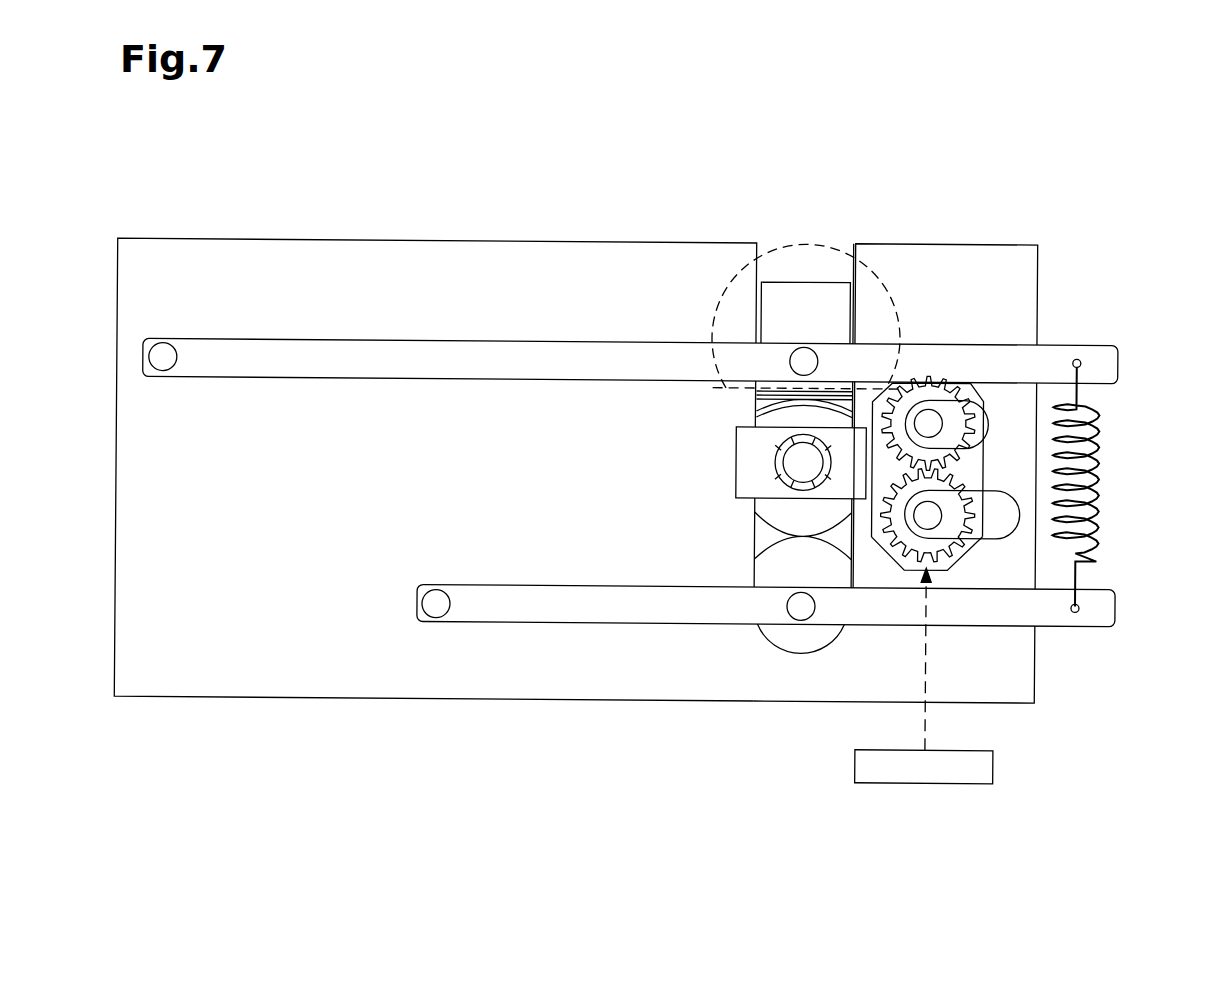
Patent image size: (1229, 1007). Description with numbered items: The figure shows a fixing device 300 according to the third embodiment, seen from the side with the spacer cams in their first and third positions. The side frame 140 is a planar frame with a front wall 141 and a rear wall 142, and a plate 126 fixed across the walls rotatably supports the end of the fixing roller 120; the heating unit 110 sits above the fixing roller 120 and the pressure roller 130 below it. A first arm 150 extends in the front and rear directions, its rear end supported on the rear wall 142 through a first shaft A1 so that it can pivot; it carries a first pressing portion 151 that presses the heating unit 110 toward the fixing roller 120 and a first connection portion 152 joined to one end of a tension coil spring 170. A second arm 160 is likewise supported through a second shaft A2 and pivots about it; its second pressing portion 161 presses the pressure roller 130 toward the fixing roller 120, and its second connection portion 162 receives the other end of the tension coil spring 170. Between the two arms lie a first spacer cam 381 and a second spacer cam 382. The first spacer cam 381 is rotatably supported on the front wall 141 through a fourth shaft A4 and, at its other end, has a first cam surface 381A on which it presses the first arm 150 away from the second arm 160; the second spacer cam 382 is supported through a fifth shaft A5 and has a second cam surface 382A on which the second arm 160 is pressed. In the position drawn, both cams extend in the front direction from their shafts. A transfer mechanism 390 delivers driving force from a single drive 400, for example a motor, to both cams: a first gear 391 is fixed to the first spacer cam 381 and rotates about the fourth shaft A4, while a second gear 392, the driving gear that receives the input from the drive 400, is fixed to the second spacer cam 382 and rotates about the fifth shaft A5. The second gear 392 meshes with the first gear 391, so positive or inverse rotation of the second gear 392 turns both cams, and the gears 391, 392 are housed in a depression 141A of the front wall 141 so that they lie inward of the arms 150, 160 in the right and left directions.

The fixing device 300 is at (186, 205).
The heating unit 110 is at (819, 242).
The fixing roller 120 is at (772, 511).
The plate 126 is at (745, 457).
The pressure roller 130 is at (770, 565).
The side frame 140 is at (958, 243).
The front wall 141 is at (1002, 464).
The depression 141A is at (947, 561).
The rear wall 142 is at (559, 281).
The first arm 150 is at (442, 341).
The first pressing portion 151 is at (796, 356).
The first connection portion 152 is at (1083, 354).
The second arm 160 is at (672, 624).
The second pressing portion 161 is at (797, 609).
The second connection portion 162 is at (1078, 611).
The tension coil spring 170 is at (1100, 519).
The first spacer cam 381 is at (1036, 368).
The first cam surface 381A is at (989, 421).
The second spacer cam 382 is at (1036, 592).
The second cam surface 382A is at (1013, 529).
The transfer mechanism 390 is at (1051, 470).
The first gear 391 is at (958, 454).
The second gear 392 is at (955, 475).
The drive 400 is at (995, 763).
The first shaft A1 is at (167, 366).
The second shaft A2 is at (436, 601).
The fourth shaft A4 is at (928, 424).
The fifth shaft A5 is at (925, 516).